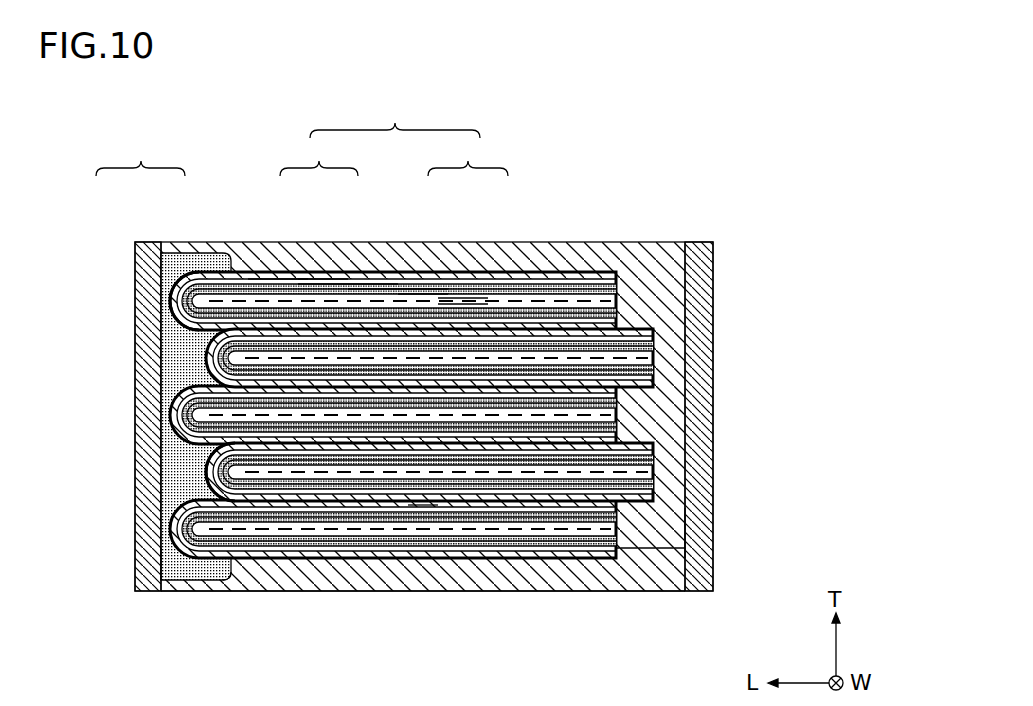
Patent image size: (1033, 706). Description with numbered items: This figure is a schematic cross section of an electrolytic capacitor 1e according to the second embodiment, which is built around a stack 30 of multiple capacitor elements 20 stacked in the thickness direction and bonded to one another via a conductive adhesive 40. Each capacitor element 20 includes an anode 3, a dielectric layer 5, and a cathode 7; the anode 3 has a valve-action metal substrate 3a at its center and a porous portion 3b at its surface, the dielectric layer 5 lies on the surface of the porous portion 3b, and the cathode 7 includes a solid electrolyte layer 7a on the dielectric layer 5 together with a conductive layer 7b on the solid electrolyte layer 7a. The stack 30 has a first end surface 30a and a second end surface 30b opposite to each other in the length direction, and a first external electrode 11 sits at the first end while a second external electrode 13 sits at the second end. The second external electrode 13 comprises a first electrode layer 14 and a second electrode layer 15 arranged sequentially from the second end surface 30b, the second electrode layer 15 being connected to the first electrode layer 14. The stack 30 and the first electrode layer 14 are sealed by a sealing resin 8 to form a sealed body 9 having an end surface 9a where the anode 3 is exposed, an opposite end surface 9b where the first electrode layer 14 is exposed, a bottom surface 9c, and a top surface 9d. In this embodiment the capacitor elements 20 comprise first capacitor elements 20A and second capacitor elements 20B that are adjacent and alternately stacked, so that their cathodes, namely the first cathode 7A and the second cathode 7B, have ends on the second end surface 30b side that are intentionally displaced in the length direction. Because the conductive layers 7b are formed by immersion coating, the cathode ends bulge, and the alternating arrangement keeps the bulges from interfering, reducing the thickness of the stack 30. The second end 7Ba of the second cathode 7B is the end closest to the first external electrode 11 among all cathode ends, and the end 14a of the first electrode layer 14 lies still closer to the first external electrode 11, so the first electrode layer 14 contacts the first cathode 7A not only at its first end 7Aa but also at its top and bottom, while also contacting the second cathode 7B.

The electrolytic capacitor 1e is at (754, 182).
The anode 3 is at (468, 158).
The valve-action metal substrate 3a is at (408, 283).
The porous portion 3b is at (445, 290).
The dielectric layer 5 is at (358, 279).
The cathode 7 is at (319, 158).
The solid electrolyte layer 7a is at (310, 272).
The conductive layer 7b is at (262, 264).
The first cathode 7A is at (178, 270).
The first end of first cathode 7Aa is at (162, 300).
The second cathode 7B is at (208, 444).
The second end of second cathode 7Ba is at (200, 467).
The sealing resin 8 is at (618, 568).
The sealed body 9 is at (626, 222).
The end surface of sealed body 9a is at (682, 318).
The end surface of sealed body 9b is at (128, 578).
The bottom surface 9c is at (547, 584).
The top surface 9d is at (550, 234).
The first external electrode 11 is at (692, 234).
The second external electrode 13 is at (140, 158).
The first electrode layer 14 is at (172, 247).
The end of first electrode layer 14a is at (220, 552).
The second electrode layer 15 is at (138, 236).
The capacitor element 20 is at (395, 119).
The first capacitor element 20A is at (150, 306).
The second capacitor element 20B is at (188, 353).
The stack 30 is at (463, 562).
The first end surface 30a is at (683, 524).
The second end surface 30b is at (155, 553).
The conductive adhesive 40 is at (410, 500).